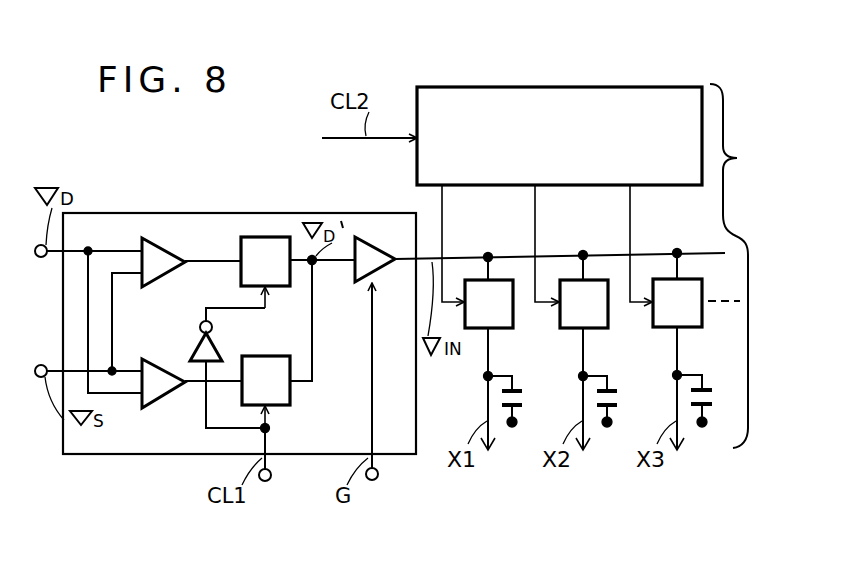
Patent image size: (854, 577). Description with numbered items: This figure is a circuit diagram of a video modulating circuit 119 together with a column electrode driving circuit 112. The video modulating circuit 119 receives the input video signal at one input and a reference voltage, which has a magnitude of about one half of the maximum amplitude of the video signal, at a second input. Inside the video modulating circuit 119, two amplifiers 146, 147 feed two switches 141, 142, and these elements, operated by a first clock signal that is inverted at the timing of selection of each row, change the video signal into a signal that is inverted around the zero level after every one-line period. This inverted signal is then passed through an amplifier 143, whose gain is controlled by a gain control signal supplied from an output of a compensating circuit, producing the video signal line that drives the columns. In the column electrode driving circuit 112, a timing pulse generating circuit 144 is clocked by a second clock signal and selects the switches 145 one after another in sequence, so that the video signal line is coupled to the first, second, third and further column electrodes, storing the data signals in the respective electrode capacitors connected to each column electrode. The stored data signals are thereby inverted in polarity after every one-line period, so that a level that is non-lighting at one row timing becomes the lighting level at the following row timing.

The column electrode driving circuit 112 is at (744, 266).
The video modulating circuit 119 is at (175, 212).
The switch 141 is at (265, 236).
The switch 142 is at (290, 396).
The amplifier 143 is at (388, 203).
The timing pulse generating circuit 144 is at (430, 86).
The switches 145 is at (502, 330).
The amplifier 146 is at (163, 254).
The amplifier 147 is at (160, 362).